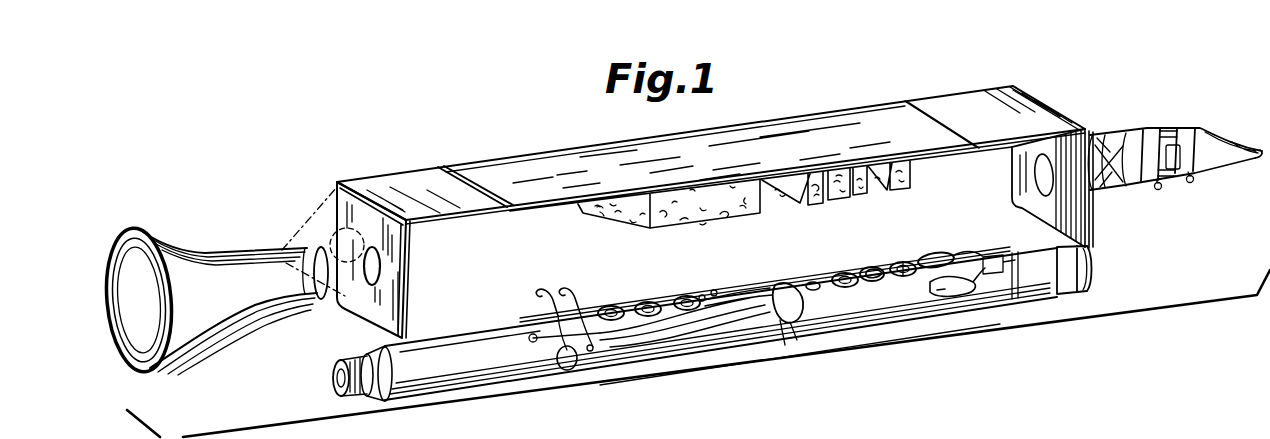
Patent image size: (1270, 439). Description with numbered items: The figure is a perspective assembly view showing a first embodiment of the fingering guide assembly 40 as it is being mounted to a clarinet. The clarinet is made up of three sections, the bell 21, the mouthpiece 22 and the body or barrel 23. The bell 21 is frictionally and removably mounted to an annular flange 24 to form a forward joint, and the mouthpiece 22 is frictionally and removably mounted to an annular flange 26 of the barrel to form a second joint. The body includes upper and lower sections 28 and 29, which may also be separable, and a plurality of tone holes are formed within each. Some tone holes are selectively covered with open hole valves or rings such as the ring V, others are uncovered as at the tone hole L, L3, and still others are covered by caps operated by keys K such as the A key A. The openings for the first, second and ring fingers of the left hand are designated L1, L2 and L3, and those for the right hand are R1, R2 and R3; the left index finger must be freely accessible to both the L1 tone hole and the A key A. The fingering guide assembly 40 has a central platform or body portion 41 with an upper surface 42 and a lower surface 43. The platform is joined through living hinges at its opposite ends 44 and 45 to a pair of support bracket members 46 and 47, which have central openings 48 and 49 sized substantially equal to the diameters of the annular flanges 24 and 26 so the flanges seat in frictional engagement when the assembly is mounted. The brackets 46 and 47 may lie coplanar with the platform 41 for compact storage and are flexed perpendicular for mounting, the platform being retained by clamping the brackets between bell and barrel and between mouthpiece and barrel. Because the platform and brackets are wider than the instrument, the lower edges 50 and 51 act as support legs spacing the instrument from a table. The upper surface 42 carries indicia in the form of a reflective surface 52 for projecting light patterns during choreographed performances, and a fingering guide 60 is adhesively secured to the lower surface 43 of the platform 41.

The bell 21 is at (207, 256).
The mouthpiece 22 is at (1186, 130).
The body or barrel 23 is at (873, 327).
The annular flange 24 is at (334, 389).
The annular flange 26 is at (1075, 272).
The upper section 28 is at (1020, 291).
The lower section 29 is at (443, 357).
The fingering guide assembly 40 is at (528, 219).
The central platform or body portion 41 is at (950, 112).
The upper surface 42 is at (408, 178).
The lower surface 43 is at (972, 150).
The end (living hinge) 44 is at (1070, 70).
The end (living hinge) 45 is at (337, 187).
The support bracket member 46 is at (1118, 207).
The support bracket member 47 is at (372, 292).
The central opening 48 is at (1033, 181).
The central opening 49 is at (381, 262).
The lower edge 50 is at (1042, 228).
The lower edge 51 is at (368, 326).
The reflective surface 52 is at (806, 101).
The fingering guide 60 is at (622, 227).
The tone hole opening (right first finger) R1 is at (712, 275).
The tone hole opening (right second finger) R2 is at (672, 278).
The tone hole opening (right ring finger) R3 is at (633, 285).
The tone hole opening (left first finger) L1 is at (901, 265).
The tone hole opening (left second finger) L2 is at (845, 273).
The tone hole opening (left ring finger) L3 is at (811, 283).
The tone hole L is at (875, 282).
The open hole valve or ring V is at (906, 264).
The A key A is at (942, 256).
The key K is at (797, 331).